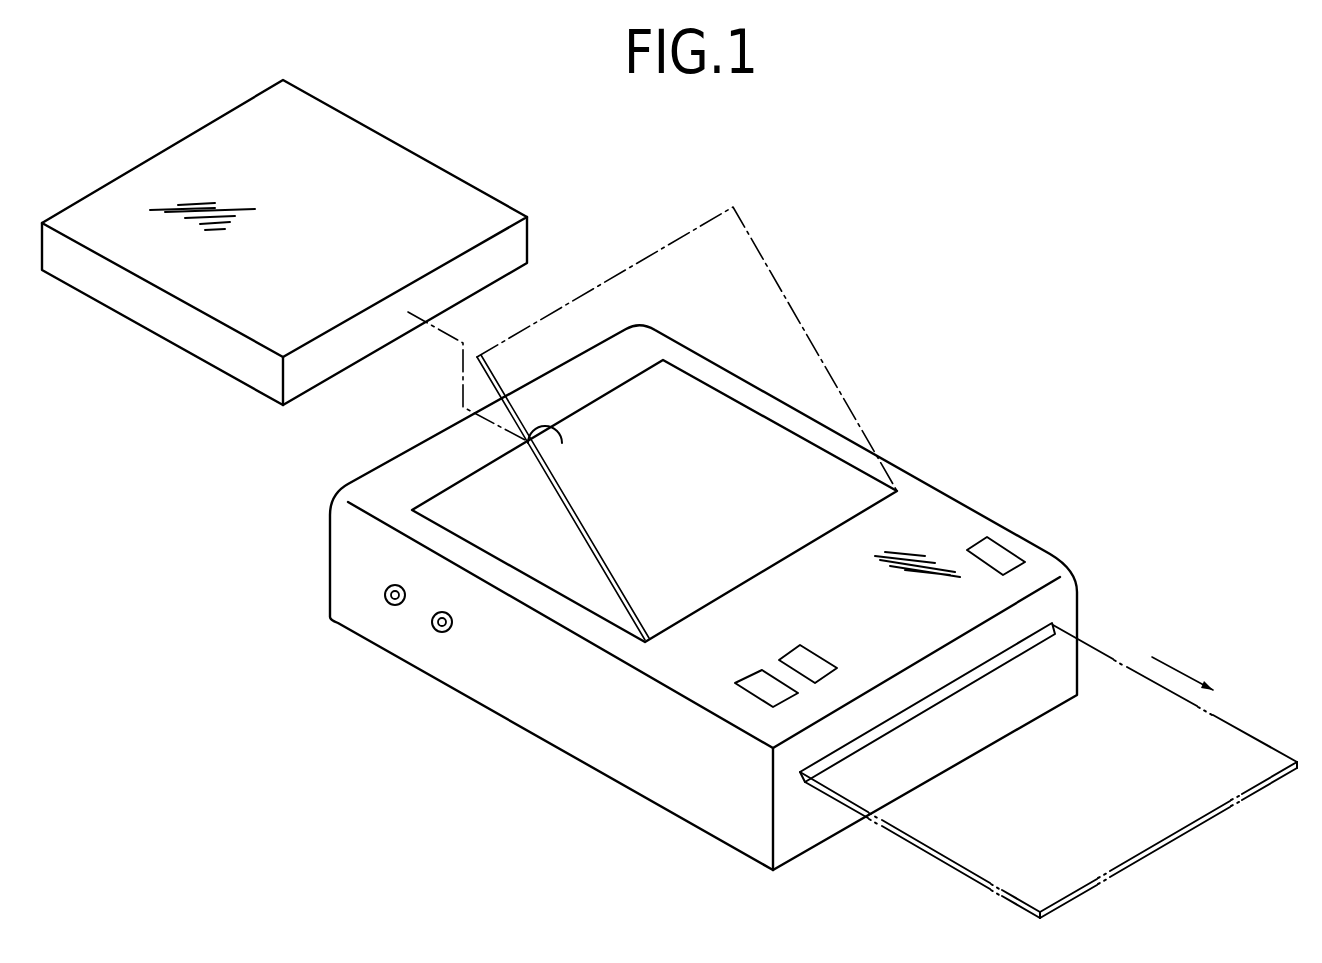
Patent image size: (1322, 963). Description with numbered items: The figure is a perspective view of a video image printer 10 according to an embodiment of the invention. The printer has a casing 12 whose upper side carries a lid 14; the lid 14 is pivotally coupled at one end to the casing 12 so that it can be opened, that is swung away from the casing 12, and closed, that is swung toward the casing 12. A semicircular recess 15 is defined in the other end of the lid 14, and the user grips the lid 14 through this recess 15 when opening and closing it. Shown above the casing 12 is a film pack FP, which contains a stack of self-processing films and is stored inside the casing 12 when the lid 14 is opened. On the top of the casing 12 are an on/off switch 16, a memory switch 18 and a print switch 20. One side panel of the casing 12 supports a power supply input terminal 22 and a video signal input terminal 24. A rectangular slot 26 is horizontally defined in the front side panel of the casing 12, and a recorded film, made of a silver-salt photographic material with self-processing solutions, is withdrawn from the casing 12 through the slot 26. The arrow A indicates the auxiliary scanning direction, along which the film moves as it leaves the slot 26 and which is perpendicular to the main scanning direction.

The video image printer 10 is at (802, 198).
The casing 12 is at (922, 505).
The lid 14 is at (445, 505).
The semicircular recess 15 is at (627, 270).
The on/off switch 16 is at (988, 552).
The memory switch 18 is at (832, 673).
The print switch 20 is at (767, 688).
The power supply input terminal 22 is at (385, 598).
The video signal input terminal 24 is at (437, 627).
The rectangular slot 26 is at (853, 748).
The film pack FP is at (425, 173).
The auxiliary scanning direction A is at (1191, 686).